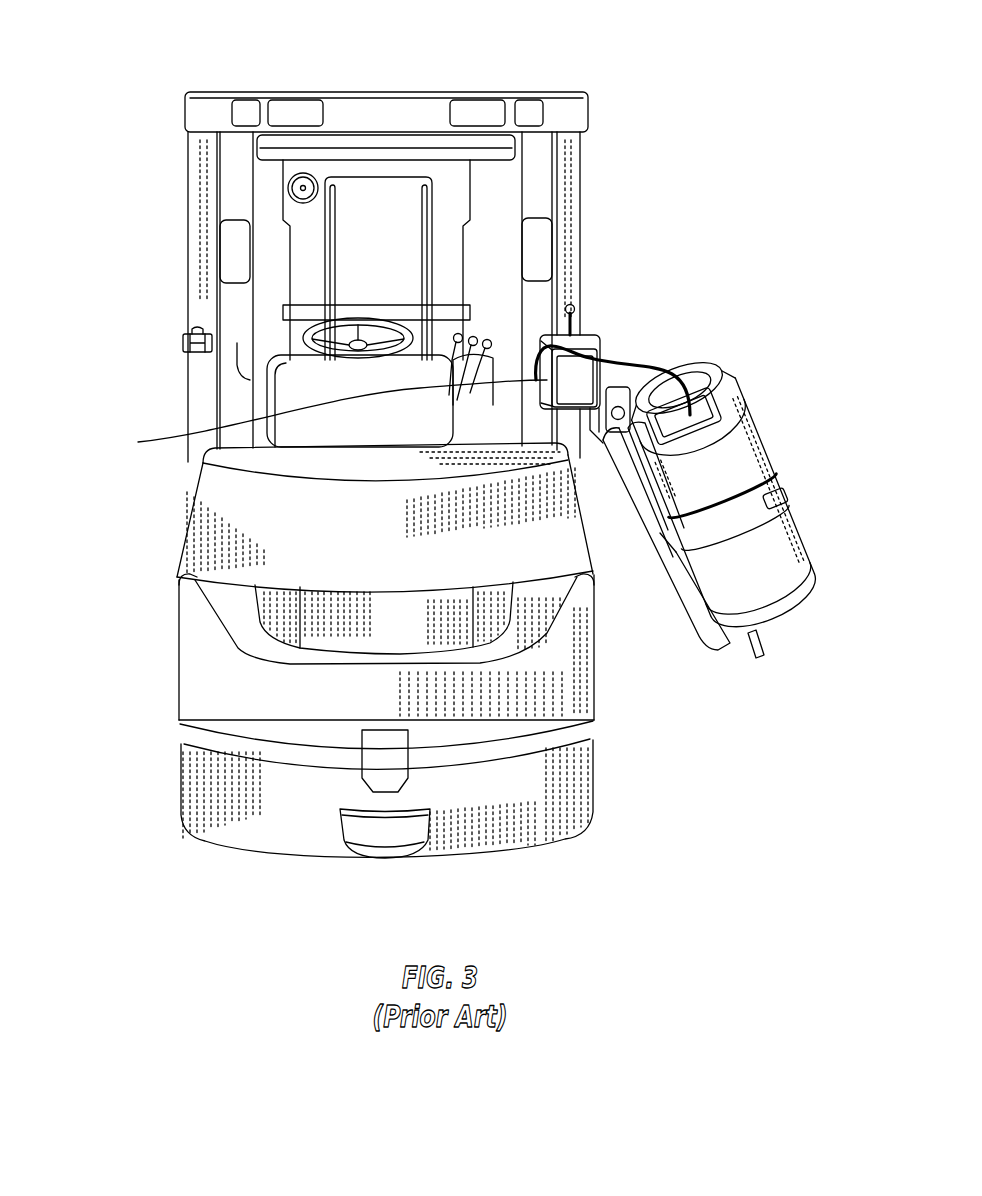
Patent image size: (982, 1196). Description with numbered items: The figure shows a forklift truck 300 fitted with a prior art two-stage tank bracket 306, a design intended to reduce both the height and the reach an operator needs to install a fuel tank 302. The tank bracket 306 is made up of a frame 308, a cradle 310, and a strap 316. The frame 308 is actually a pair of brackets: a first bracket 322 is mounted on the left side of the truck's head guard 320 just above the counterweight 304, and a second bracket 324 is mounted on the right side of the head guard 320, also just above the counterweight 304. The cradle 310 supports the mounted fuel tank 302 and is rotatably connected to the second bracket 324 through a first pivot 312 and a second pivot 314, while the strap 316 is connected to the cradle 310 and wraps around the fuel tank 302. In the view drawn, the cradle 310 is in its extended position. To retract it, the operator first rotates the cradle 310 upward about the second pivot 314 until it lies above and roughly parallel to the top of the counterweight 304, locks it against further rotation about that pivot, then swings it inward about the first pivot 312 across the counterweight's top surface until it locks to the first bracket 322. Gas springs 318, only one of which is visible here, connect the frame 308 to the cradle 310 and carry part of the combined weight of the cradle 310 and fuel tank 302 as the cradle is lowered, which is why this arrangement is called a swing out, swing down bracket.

The forklift truck 300 is at (547, 52).
The fuel tank 302 is at (797, 573).
The counterweight 304 is at (170, 532).
The tank bracket 306 is at (732, 296).
The frame 308 is at (86, 338).
The cradle 310 is at (784, 643).
The first pivot 312 is at (575, 323).
The second pivot 314 is at (626, 370).
The strap 316 is at (783, 493).
The gas springs 318 is at (611, 523).
The head guard 320 is at (195, 293).
The first bracket 322 is at (190, 357).
The second bracket 324 is at (317, 418).